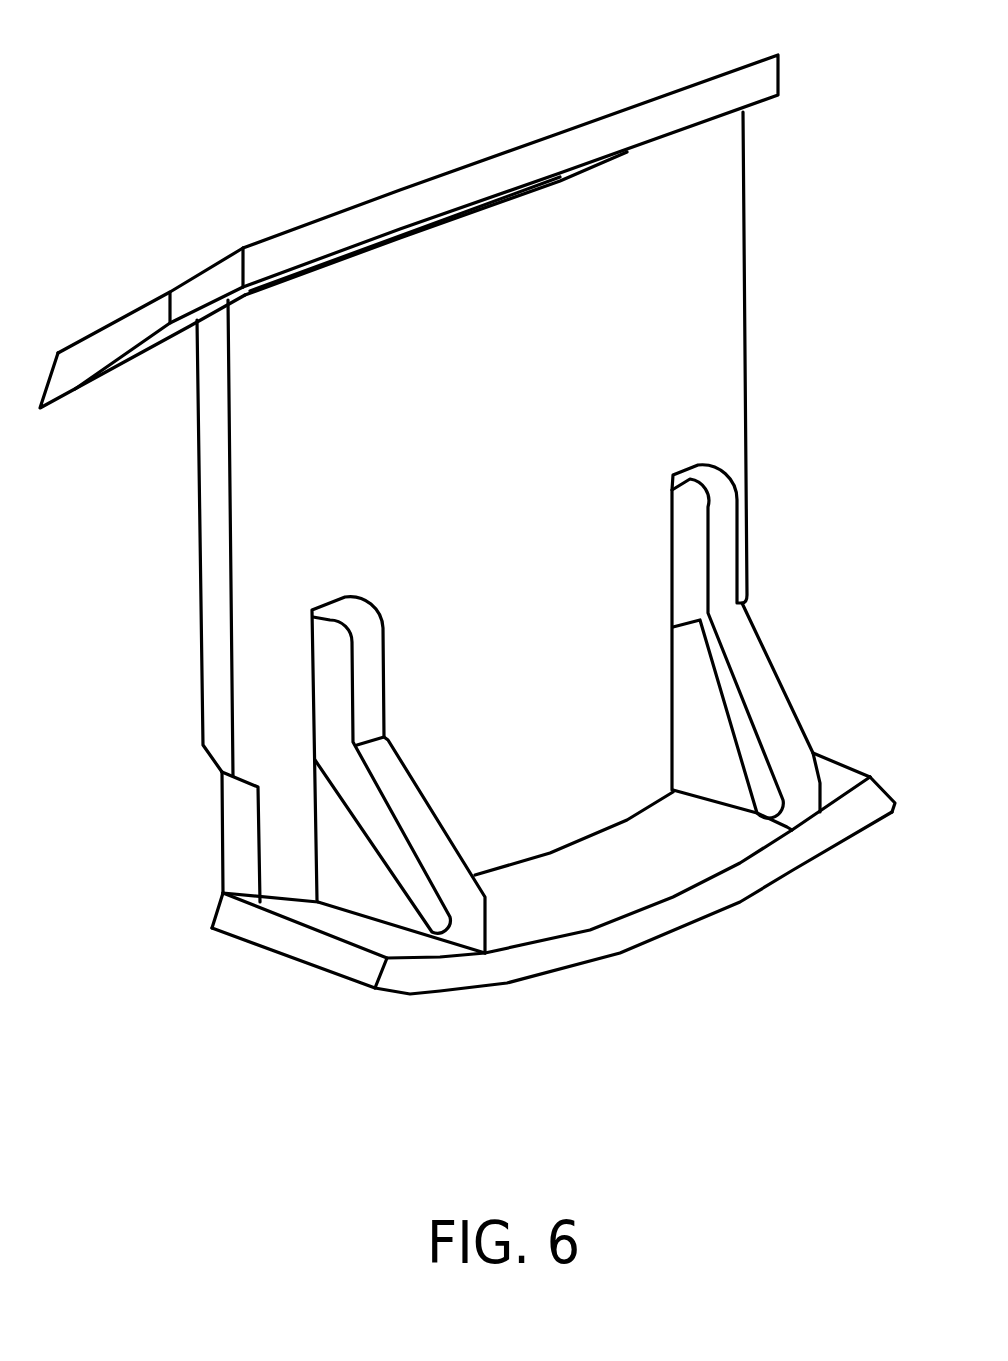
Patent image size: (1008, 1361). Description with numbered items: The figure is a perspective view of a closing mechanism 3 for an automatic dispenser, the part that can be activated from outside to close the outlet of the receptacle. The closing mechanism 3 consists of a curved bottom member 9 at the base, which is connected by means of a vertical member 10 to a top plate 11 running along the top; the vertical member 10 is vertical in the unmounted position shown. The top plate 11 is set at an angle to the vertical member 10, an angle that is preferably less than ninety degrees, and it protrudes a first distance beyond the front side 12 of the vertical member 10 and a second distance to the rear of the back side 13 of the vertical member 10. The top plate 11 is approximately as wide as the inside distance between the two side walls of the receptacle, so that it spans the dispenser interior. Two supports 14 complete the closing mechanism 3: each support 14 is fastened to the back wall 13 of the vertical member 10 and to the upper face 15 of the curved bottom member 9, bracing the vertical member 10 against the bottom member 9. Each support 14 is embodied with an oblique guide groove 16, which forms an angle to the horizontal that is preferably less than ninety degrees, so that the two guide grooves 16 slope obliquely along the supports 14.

The closing mechanism 3 is at (409, 207).
The curved bottom member 9 is at (577, 958).
The vertical member 10 is at (441, 507).
The top plate 11 is at (440, 190).
The front side 12 is at (200, 480).
The back side 13 is at (237, 532).
The support 14 is at (490, 733).
The upper face 15 is at (658, 882).
The oblique guide groove 16 is at (327, 723).